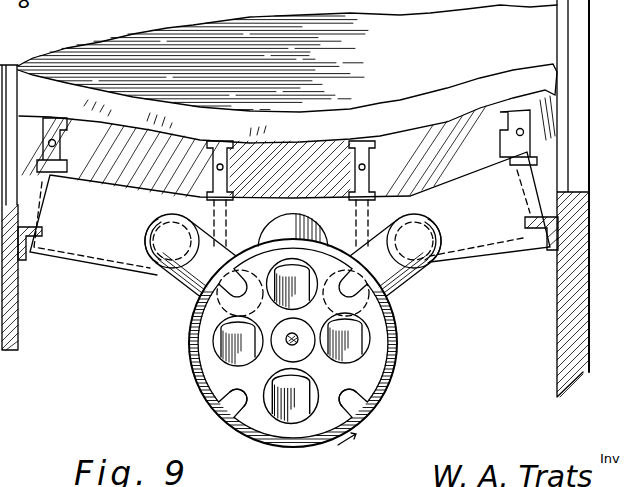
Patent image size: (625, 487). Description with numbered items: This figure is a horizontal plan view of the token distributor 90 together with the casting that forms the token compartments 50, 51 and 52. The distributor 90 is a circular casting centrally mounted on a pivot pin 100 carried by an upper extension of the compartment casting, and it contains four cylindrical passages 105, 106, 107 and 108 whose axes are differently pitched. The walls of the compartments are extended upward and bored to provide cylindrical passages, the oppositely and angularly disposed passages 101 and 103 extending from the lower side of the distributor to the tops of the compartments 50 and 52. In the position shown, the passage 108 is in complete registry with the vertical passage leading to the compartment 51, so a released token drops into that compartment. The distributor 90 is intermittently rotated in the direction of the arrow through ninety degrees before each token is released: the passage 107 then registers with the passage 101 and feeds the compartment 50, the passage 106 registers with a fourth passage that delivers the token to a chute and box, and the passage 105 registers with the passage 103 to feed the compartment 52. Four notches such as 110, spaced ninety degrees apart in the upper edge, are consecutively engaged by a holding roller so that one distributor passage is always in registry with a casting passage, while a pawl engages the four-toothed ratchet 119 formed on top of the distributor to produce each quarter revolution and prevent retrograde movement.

The compartment 50 is at (66, 256).
The compartment 51 is at (364, 210).
The compartment 52 is at (500, 250).
The token distributor 90 is at (397, 363).
The pivot pin 100 is at (324, 366).
The cylindrical passage 101 is at (208, 222).
The cylindrical passage 103 is at (410, 204).
The cylindrical passage 105 is at (225, 362).
The cylindrical passage 106 is at (294, 418).
The cylindrical passage 107 is at (360, 348).
The cylindrical passage 108 is at (286, 264).
The notch 110 is at (346, 399).
The ratchet 119 is at (268, 360).